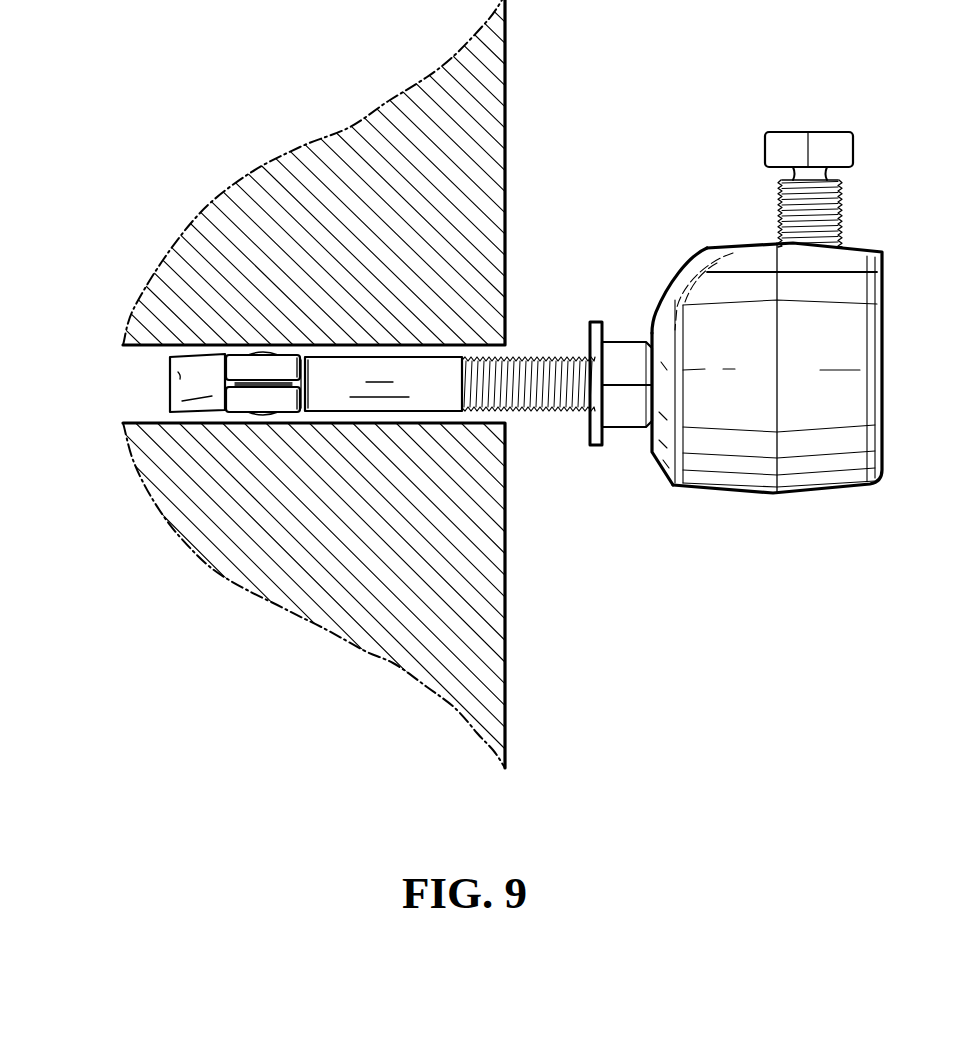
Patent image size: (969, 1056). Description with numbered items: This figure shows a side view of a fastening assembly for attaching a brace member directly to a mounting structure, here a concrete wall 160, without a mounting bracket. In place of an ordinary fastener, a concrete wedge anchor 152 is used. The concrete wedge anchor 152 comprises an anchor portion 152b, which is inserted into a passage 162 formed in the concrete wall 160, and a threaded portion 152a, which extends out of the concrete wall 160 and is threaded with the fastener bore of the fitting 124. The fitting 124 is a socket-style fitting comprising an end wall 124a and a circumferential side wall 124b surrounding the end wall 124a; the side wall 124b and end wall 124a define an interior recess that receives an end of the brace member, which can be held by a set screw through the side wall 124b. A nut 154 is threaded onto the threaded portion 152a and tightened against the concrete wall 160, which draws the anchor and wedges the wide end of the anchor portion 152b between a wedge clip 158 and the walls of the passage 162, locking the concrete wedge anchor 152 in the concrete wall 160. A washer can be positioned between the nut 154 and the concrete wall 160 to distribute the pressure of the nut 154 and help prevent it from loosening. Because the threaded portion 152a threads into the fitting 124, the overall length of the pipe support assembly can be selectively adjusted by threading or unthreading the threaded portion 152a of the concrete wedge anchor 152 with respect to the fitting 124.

The fitting 124 is at (763, 392).
The end wall 124a is at (650, 333).
The circumferential side wall 124b is at (752, 495).
The concrete wedge anchor 152 is at (383, 350).
The threaded portion 152a is at (515, 412).
The anchor portion 152b is at (170, 387).
The nut 154 is at (615, 405).
The wedge clip 158 is at (238, 360).
The concrete wall 160 is at (352, 592).
The passage 162 is at (297, 423).